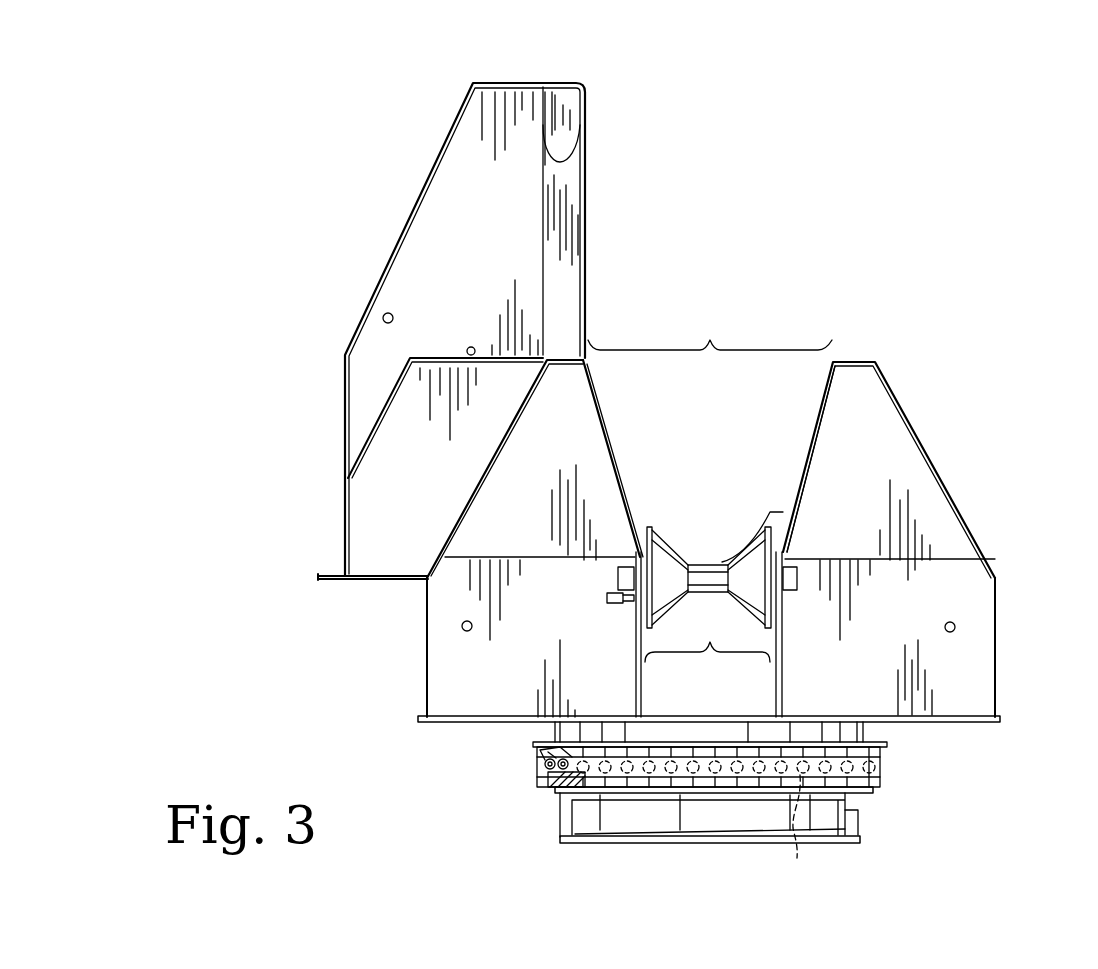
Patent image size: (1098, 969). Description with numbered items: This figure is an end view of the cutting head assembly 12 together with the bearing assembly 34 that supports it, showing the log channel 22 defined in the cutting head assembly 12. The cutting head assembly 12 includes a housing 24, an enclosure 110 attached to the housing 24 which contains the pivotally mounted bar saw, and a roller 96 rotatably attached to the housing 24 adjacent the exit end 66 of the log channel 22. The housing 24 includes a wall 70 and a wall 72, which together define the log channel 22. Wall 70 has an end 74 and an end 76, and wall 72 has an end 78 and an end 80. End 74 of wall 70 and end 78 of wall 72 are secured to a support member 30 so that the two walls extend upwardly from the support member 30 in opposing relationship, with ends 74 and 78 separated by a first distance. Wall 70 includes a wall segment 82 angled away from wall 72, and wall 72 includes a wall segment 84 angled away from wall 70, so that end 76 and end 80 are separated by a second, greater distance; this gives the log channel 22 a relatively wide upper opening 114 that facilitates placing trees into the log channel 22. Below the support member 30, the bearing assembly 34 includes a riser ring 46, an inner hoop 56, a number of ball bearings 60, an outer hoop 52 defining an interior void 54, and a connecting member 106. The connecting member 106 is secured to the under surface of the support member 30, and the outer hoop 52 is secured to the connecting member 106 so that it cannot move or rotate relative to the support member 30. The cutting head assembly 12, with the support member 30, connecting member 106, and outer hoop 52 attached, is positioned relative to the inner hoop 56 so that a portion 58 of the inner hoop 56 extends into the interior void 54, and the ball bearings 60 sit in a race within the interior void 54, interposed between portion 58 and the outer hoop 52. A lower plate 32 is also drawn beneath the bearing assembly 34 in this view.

The cutting head assembly 12 is at (975, 222).
The log channel 22 is at (720, 278).
The housing 24 is at (980, 583).
The support member 30 is at (1000, 720).
The bottom mounting plate 32 is at (860, 843).
The bearing assembly 34 is at (950, 815).
The riser ring 46 is at (848, 805).
The outer hoop 52 is at (548, 752).
The interior void 54 is at (548, 788).
The inner hoop 56 is at (876, 796).
The portion of inner hoop 58 is at (548, 767).
The ball bearings 60 is at (553, 795).
The exit end 66 is at (718, 717).
The wall 70 is at (658, 495).
The wall 72 is at (770, 495).
The end of wall 70 74 is at (641, 717).
The end of wall 70 76 is at (588, 357).
The end of wall 72 78 is at (780, 717).
The end of wall 72 80 is at (832, 357).
The wall segment 82 is at (598, 400).
The wall segment 84 is at (818, 398).
The roller 96 is at (735, 547).
The connecting member 106 is at (550, 742).
The enclosure 110 is at (588, 88).
The upper opening 114 is at (805, 245).